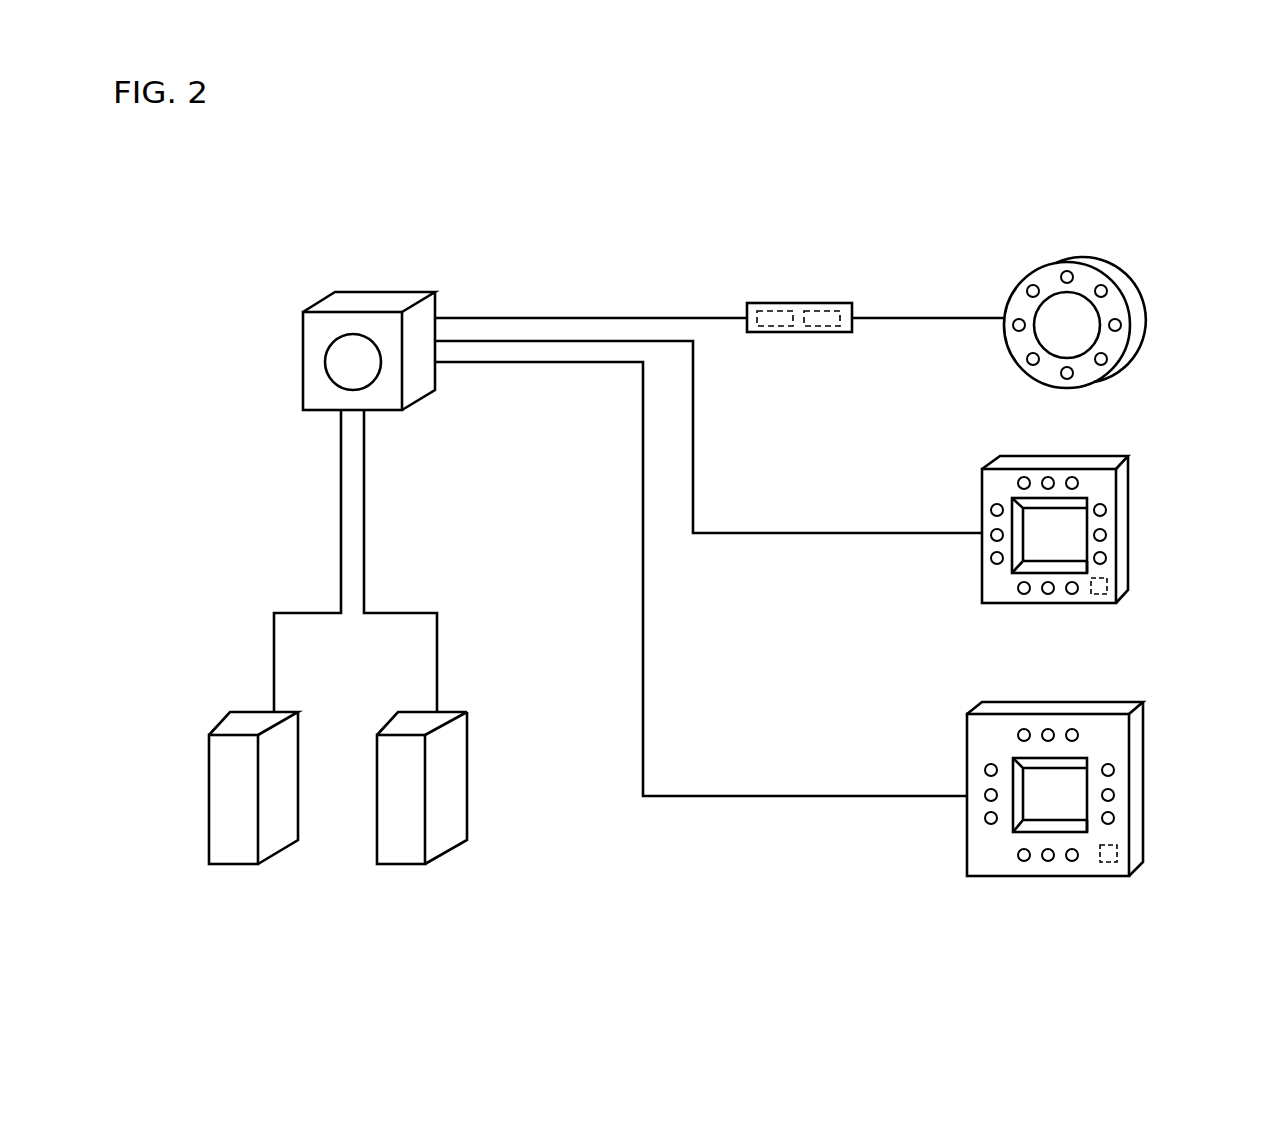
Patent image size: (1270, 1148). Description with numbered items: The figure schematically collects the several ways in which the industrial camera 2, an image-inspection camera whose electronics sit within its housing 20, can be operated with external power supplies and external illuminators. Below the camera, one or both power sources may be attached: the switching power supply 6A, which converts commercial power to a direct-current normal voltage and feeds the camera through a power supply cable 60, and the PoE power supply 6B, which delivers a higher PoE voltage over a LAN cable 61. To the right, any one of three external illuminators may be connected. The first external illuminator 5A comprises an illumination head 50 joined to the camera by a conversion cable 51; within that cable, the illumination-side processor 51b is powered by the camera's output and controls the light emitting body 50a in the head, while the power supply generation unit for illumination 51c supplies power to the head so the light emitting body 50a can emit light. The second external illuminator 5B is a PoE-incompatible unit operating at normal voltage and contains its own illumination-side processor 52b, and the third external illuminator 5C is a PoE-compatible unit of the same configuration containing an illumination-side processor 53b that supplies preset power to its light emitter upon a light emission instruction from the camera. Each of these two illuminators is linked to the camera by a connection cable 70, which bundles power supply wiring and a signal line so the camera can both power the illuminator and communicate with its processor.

The industrial camera 2 is at (332, 307).
The housing 20 is at (325, 351).
The first external illuminator 5A is at (952, 181).
The conversion cable 51 is at (813, 294).
The illumination-side processor 51b is at (772, 333).
The power supply generation unit for illumination 51c is at (832, 333).
The illumination head 50 is at (1068, 285).
The light emitting body 50a is at (1108, 290).
The connection cable 70 is at (833, 534).
The second external illuminator 5B is at (1107, 529).
The illumination-side processor 52b is at (1108, 585).
The third external illuminator 5C is at (1103, 789).
The illumination-side processor 53b is at (1120, 853).
The power supply cable 60 is at (274, 657).
The LAN cable 61 is at (437, 657).
The switching power supply 6A is at (233, 866).
The PoE power supply 6B is at (401, 866).